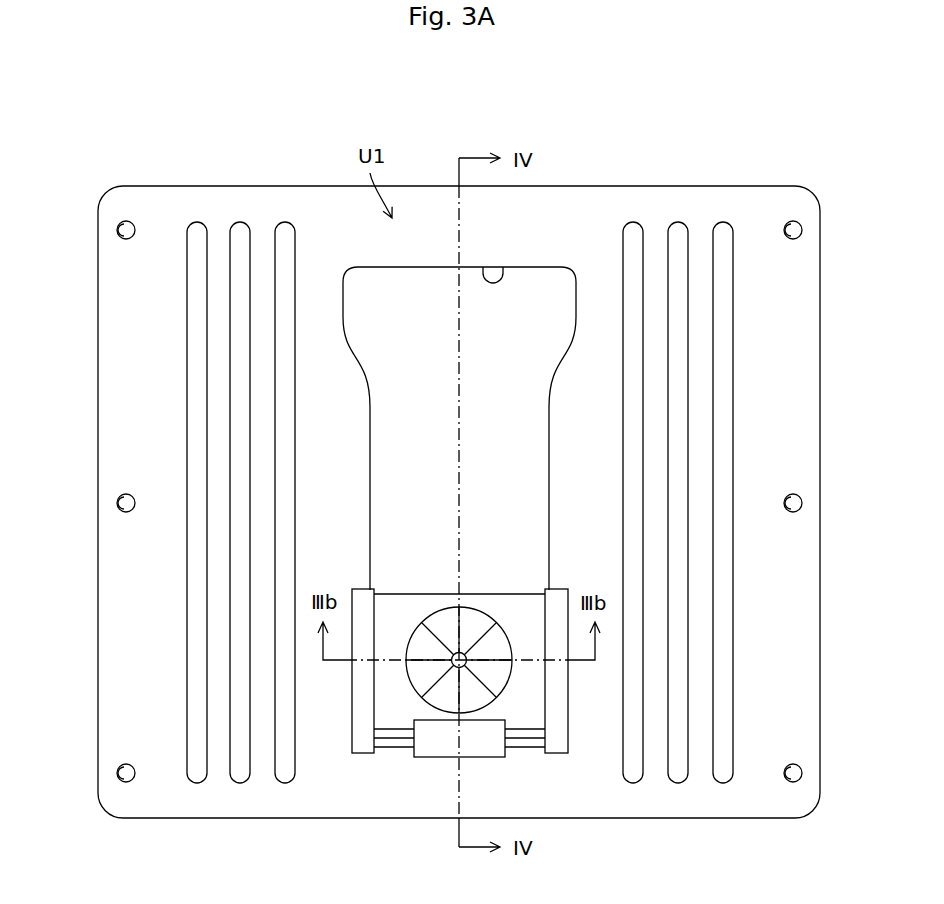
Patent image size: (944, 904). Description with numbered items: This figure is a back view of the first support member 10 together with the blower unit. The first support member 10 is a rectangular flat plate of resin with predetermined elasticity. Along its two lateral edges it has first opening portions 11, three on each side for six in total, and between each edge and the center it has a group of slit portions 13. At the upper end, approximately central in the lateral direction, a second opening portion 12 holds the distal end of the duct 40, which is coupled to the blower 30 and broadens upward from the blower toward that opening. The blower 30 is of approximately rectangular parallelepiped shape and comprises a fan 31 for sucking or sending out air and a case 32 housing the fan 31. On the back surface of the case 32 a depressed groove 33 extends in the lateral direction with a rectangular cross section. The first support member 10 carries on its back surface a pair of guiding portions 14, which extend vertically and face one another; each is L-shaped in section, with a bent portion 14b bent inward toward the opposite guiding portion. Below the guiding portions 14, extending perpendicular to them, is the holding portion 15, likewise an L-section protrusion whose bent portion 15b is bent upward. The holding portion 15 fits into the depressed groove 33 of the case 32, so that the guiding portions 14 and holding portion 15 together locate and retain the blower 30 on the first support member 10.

The first support member 10 is at (820, 122).
The first opening portions 11 is at (117, 233).
The second opening portion 12 is at (501, 266).
The slit portions 13 is at (242, 226).
The guiding portions 14 is at (462, 703).
The bent portion 14b is at (362, 690).
The holding portion 15 is at (471, 768).
The bent portion 15b is at (472, 753).
The blower 30 is at (462, 666).
The fan 31 is at (476, 612).
The case 32 is at (525, 612).
The depressed groove 33 is at (534, 732).
The duct 40 is at (523, 373).